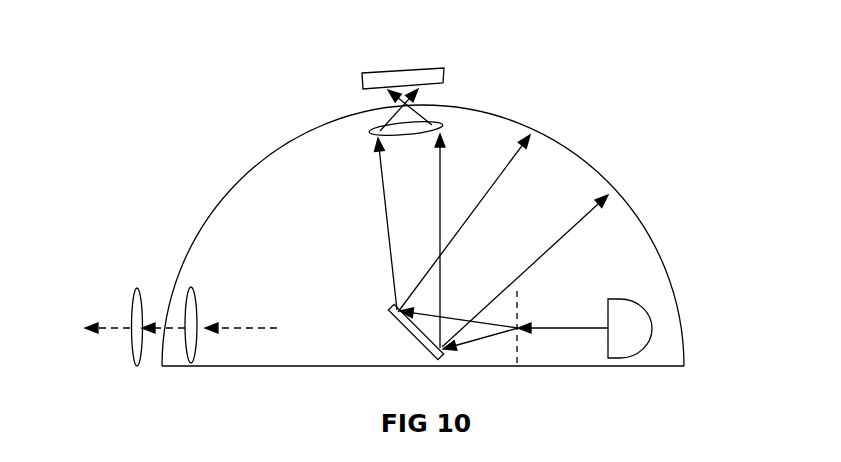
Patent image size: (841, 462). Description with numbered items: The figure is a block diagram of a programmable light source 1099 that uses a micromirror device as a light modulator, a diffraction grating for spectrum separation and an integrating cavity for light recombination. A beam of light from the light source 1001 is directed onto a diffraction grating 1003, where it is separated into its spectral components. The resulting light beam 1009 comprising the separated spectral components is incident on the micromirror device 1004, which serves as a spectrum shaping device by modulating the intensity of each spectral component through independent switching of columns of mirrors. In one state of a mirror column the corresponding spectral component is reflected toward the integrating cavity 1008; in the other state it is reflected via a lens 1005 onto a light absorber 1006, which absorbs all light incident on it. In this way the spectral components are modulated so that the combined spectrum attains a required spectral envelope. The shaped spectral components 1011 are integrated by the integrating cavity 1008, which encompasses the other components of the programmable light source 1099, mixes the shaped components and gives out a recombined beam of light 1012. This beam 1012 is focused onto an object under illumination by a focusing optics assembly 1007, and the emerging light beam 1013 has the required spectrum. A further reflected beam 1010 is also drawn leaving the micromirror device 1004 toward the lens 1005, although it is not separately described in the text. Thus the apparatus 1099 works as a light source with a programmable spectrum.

The light source 1001 is at (627, 300).
The diffraction grating 1003 is at (516, 358).
The micromirror device 1004 is at (396, 319).
The lens 1005 is at (372, 125).
The light absorber 1006 is at (428, 68).
The focusing optics assembly 1007 is at (165, 314).
The integrating cavity 1008 is at (209, 216).
The light beam comprising separated spectral components 1009 is at (454, 314).
The reflected light beam 1010 is at (442, 186).
The shaped spectral components 1011 is at (538, 258).
The recombined beam of light 1012 is at (243, 327).
The light beam 1013 is at (122, 327).
The programmable light source 1099 is at (590, 85).